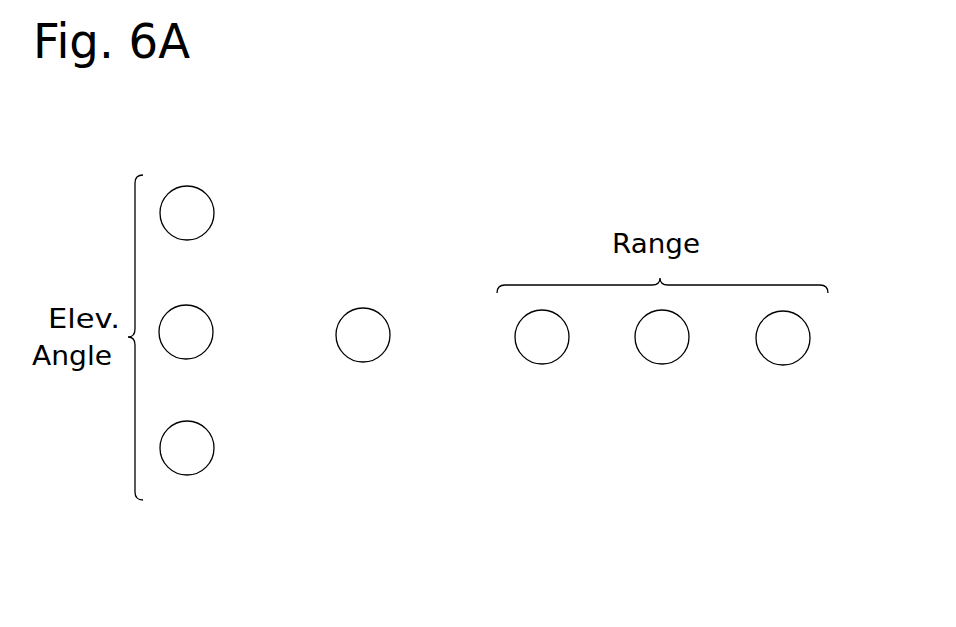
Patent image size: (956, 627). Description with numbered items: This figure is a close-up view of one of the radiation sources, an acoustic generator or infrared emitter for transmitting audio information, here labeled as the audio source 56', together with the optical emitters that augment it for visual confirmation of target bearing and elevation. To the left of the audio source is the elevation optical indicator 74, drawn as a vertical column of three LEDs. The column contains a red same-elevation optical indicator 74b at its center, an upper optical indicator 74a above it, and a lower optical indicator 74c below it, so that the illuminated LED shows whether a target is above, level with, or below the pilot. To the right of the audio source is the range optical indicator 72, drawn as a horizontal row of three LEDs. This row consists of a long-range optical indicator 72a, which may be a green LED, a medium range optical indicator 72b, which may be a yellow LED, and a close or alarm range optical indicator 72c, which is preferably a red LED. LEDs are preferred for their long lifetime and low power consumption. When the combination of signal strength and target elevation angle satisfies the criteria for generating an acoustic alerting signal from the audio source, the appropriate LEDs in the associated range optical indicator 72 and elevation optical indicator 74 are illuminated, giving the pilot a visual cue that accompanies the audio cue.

The elevation optical indicator 74 is at (214, 369).
The upper optical indicator 74a is at (187, 208).
The same-elevation optical indicator 74b is at (183, 332).
The lower optical indicator 74c is at (187, 445).
The audio indicator label 56' is at (377, 245).
The range optical indicator 72 is at (692, 416).
The long-range optical indicator 72a is at (783, 338).
The medium range optical indicator 72b is at (662, 343).
The close range optical indicator 72c is at (546, 340).